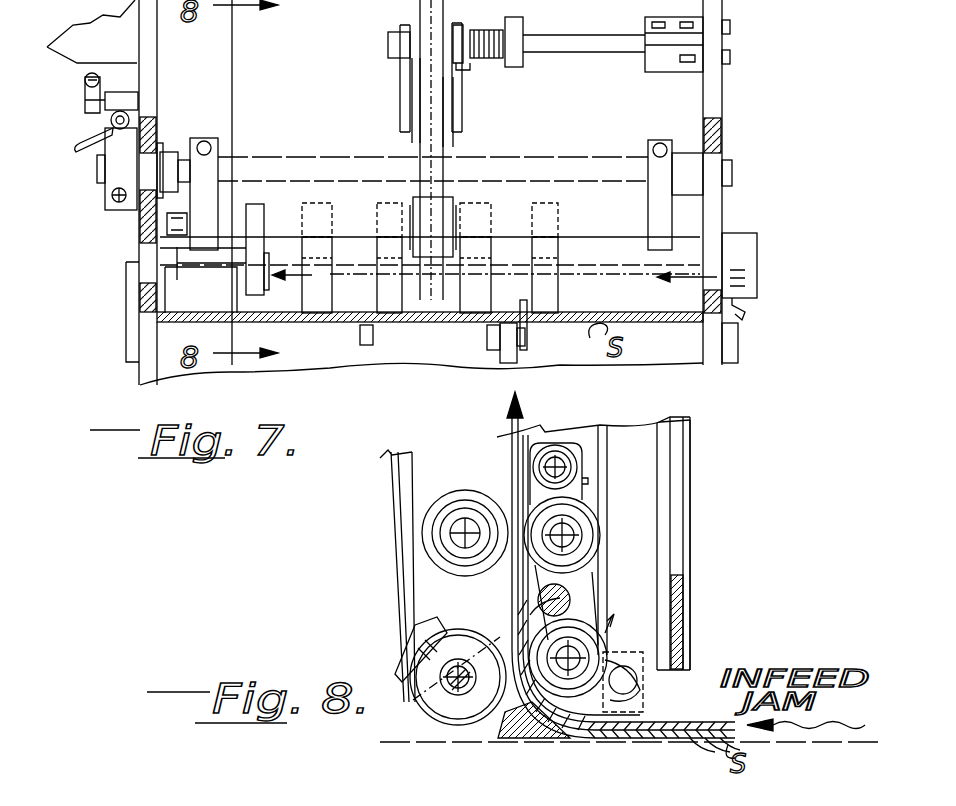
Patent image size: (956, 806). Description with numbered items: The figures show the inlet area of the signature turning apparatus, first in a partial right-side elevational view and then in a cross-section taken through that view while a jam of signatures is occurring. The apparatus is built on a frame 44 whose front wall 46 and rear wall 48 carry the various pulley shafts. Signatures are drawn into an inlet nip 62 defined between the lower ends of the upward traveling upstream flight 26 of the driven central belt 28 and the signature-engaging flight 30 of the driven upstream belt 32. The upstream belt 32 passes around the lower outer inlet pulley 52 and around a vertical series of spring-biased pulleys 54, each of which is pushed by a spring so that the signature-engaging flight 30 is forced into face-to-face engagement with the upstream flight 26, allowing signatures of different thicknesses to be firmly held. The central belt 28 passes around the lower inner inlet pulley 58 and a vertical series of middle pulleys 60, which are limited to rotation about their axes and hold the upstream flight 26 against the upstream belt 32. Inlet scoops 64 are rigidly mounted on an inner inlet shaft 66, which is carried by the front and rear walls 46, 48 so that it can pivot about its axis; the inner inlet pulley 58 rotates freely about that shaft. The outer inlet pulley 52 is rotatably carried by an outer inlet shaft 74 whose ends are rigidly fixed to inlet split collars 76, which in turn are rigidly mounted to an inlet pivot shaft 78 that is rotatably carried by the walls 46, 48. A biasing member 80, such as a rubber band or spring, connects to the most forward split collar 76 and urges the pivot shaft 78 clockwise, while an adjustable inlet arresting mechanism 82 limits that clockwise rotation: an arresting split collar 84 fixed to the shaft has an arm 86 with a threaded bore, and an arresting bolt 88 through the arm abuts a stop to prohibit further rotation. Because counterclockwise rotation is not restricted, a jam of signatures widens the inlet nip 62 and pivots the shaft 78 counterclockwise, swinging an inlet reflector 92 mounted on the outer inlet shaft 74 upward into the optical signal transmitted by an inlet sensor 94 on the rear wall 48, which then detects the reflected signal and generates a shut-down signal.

In FIG. 8, the upstream flight 26 is at (512, 462).
In FIG. 8, the central belt 28 is at (395, 516).
In FIG. 7, the signature-engaging flight 30 is at (410, 5).
In FIG. 8, the signature-engaging flight 30 is at (593, 418).
In FIG. 8, the upstream belt 32 is at (617, 467).
In FIG. 8, the frame 44 is at (690, 496).
In FIG. 7, the front wall 46 is at (140, 49).
In FIG. 7, the rear wall 48 is at (722, 138).
In FIG. 7, the outer inlet pulley 52 is at (450, 203).
In FIG. 8, the outer inlet pulley 52 is at (600, 653).
In FIG. 7, the spring-biased pulleys 54 is at (448, 107).
In FIG. 8, the spring-biased pulleys 54 is at (600, 537).
In FIG. 8, the inner inlet pulley 58 is at (440, 713).
In FIG. 8, the middle pulleys 60 is at (440, 557).
In FIG. 8, the inlet nip 62 is at (590, 727).
In FIG. 7, the inlet scoops 64 is at (370, 333).
In FIG. 8, the inlet scoops 64 is at (523, 717).
In FIG. 8, the inner inlet shaft 66 is at (447, 670).
In FIG. 7, the outer inlet shaft 74 is at (575, 200).
In FIG. 8, the outer inlet shaft 74 is at (608, 690).
In FIG. 7, the inlet split collars 76 is at (213, 170).
In FIG. 8, the inlet split collars 76 is at (603, 620).
In FIG. 7, the inlet pivot shaft 78 is at (355, 210).
In FIG. 8, the inlet pivot shaft 78 is at (600, 578).
In FIG. 7, the biasing member 80 is at (180, 235).
In FIG. 7, the inlet arresting mechanism 82 is at (92, 148).
In FIG. 7, the arresting split collar 84 is at (120, 212).
In FIG. 7, the arm 86 is at (128, 92).
In FIG. 7, the arresting bolt 88 is at (130, 118).
In FIG. 7, the inlet reflector 92 is at (268, 286).
In FIG. 8, the inlet reflector 92 is at (673, 740).
In FIG. 7, the inlet sensor 94 is at (747, 262).
In FIG. 8, the inlet sensor 94 is at (647, 673).